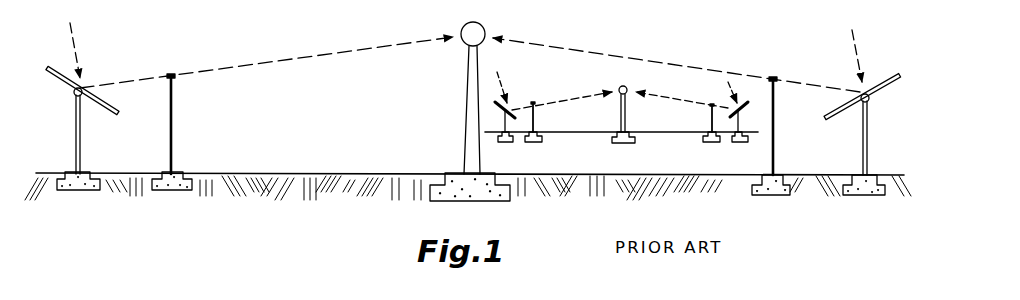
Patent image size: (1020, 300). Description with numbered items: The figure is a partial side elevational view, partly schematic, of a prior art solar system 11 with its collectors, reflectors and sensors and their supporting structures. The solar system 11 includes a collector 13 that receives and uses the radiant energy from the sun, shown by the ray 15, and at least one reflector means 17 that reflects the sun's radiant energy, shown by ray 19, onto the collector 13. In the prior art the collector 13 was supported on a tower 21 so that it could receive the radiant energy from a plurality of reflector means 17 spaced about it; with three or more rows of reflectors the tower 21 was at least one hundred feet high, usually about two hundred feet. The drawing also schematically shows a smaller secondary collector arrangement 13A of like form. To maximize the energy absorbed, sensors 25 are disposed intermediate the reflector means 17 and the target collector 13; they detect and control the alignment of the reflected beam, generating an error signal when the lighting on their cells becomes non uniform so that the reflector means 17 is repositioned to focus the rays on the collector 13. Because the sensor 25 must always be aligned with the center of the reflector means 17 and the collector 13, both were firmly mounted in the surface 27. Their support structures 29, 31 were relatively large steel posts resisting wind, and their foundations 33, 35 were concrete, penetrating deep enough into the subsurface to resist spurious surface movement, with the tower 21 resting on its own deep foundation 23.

The solar system 11 is at (272, 48).
The collector 13 is at (467, 47).
The secondary receiver 13A is at (611, 91).
The ray 15 is at (365, 48).
The reflector means 17 is at (100, 107).
The ray 19 is at (77, 53).
The tower 21 is at (466, 115).
The tower foundation 23 is at (442, 191).
The sensor 25 is at (171, 73).
The surface 27 is at (383, 173).
The support structure 29 is at (76, 140).
The support structure 31 is at (173, 128).
The foundation 33 is at (80, 184).
The foundation 35 is at (190, 184).